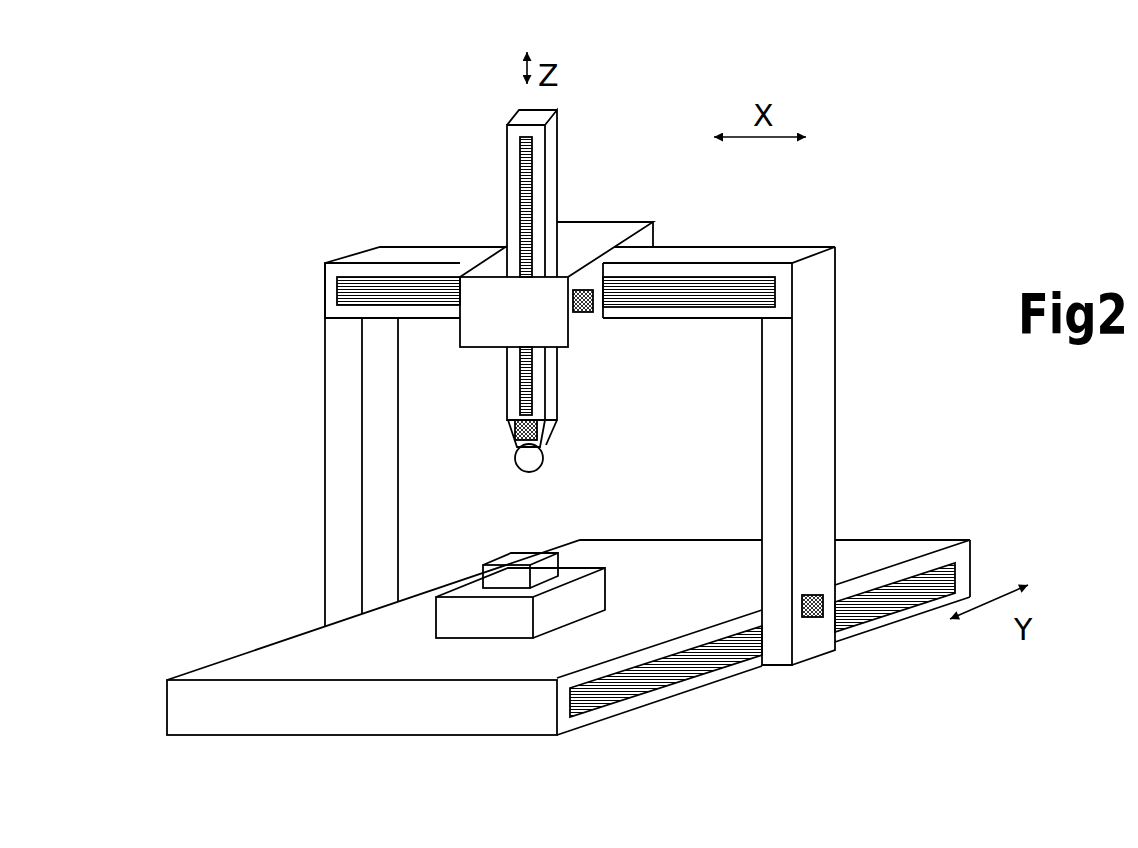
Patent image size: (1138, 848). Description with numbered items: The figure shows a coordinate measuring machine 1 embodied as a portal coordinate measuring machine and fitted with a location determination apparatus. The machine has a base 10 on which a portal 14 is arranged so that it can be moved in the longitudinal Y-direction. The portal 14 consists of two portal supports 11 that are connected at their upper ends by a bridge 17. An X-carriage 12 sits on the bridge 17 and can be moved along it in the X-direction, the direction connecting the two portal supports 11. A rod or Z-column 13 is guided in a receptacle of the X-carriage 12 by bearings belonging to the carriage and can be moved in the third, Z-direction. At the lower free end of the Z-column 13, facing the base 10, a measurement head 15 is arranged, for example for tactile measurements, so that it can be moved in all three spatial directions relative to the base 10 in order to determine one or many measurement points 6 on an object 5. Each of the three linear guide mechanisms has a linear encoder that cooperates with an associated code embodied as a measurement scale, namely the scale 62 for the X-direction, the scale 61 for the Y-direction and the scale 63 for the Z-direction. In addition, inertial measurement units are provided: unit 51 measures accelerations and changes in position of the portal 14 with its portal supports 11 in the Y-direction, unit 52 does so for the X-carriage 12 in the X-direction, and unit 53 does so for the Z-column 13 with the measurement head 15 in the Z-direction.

The coordinate measuring machine 1 is at (547, 421).
The object 5 is at (622, 660).
The measurement points 6 is at (564, 514).
The base 10 is at (544, 637).
The portal supports 11 is at (863, 456).
The X-carriage 12 is at (595, 253).
The Z-column 13 is at (427, 319).
The portal 14 is at (285, 444).
The measurement head 15 is at (387, 486).
The bridge 17 is at (612, 255).
The inertial measurement unit 51 is at (865, 661).
The inertial measurement unit 52 is at (630, 334).
The inertial measurement unit 53 is at (368, 397).
The measurement scale 61 is at (773, 640).
The measurement scale 62 is at (632, 252).
The measurement scale 63 is at (586, 266).